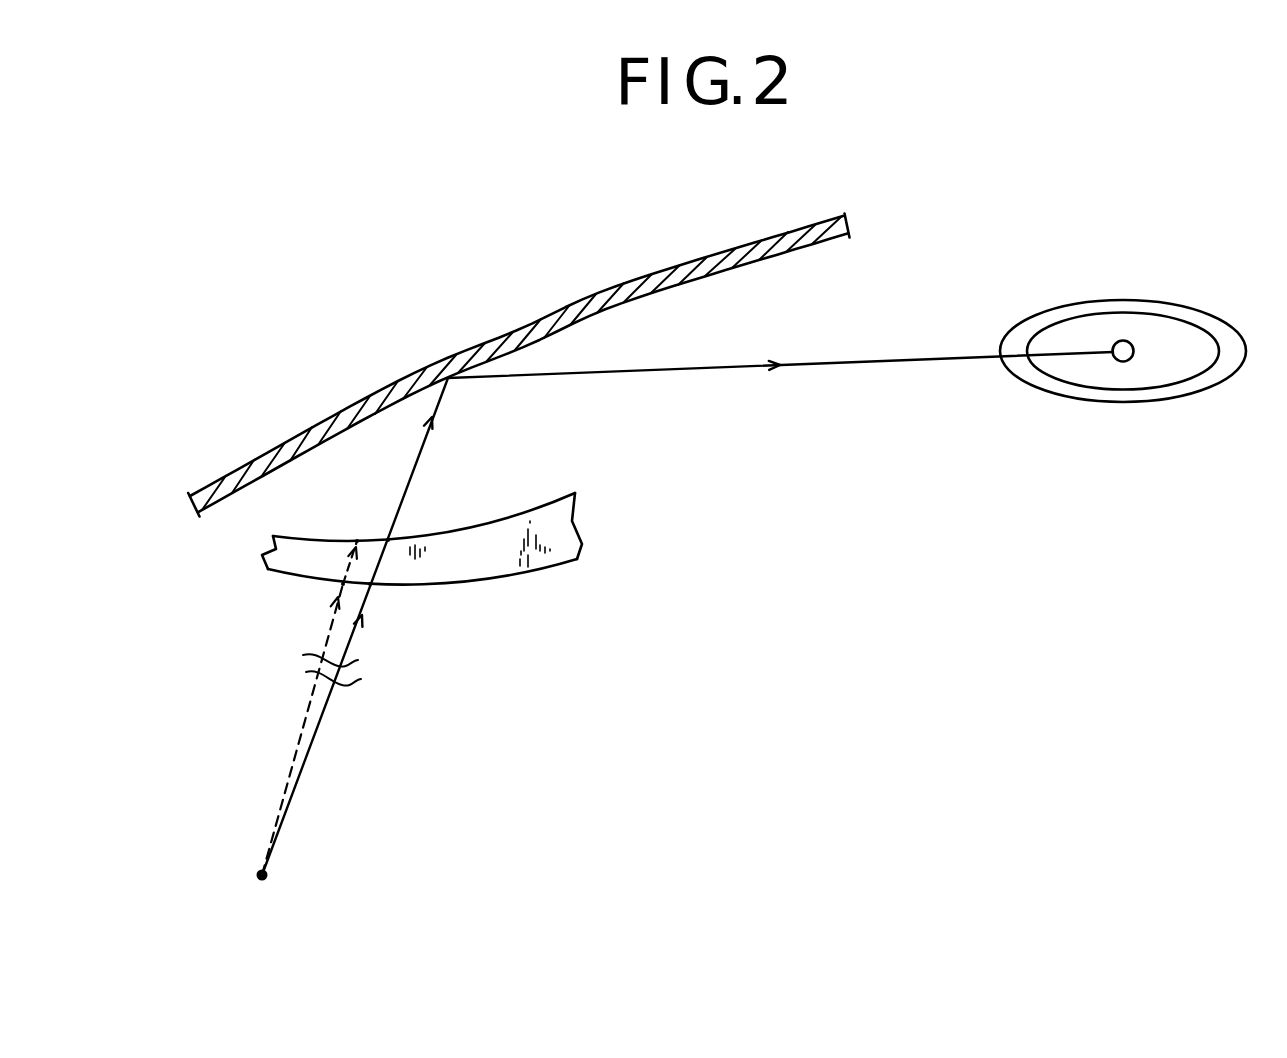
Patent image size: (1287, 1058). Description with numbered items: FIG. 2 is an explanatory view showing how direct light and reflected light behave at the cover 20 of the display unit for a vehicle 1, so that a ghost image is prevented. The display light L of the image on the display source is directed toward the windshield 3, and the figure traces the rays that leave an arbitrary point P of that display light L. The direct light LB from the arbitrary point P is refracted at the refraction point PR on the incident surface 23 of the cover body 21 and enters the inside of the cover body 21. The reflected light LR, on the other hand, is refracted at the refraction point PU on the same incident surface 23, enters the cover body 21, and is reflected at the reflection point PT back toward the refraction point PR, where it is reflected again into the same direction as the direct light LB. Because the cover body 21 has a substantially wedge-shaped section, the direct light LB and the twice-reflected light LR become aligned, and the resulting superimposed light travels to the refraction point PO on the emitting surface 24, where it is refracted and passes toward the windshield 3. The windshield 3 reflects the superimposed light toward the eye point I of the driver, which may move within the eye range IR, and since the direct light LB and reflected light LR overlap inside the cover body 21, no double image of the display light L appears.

The windshield 3 is at (622, 284).
The eye range IR is at (1073, 303).
The eye point I is at (1131, 344).
The direct light LB is at (424, 442).
The reflected light LR is at (325, 637).
The display unit for a vehicle 1 is at (542, 596).
The cover 20 is at (477, 596).
The cover body 21 is at (468, 565).
The incident surface 23 is at (503, 577).
The emitting surface 24 is at (528, 505).
The reflection point PT is at (351, 527).
The refraction point PO is at (403, 535).
The refraction point PU is at (331, 582).
The refraction point PR is at (381, 601).
The display light L is at (333, 826).
The arbitrary point P is at (268, 878).